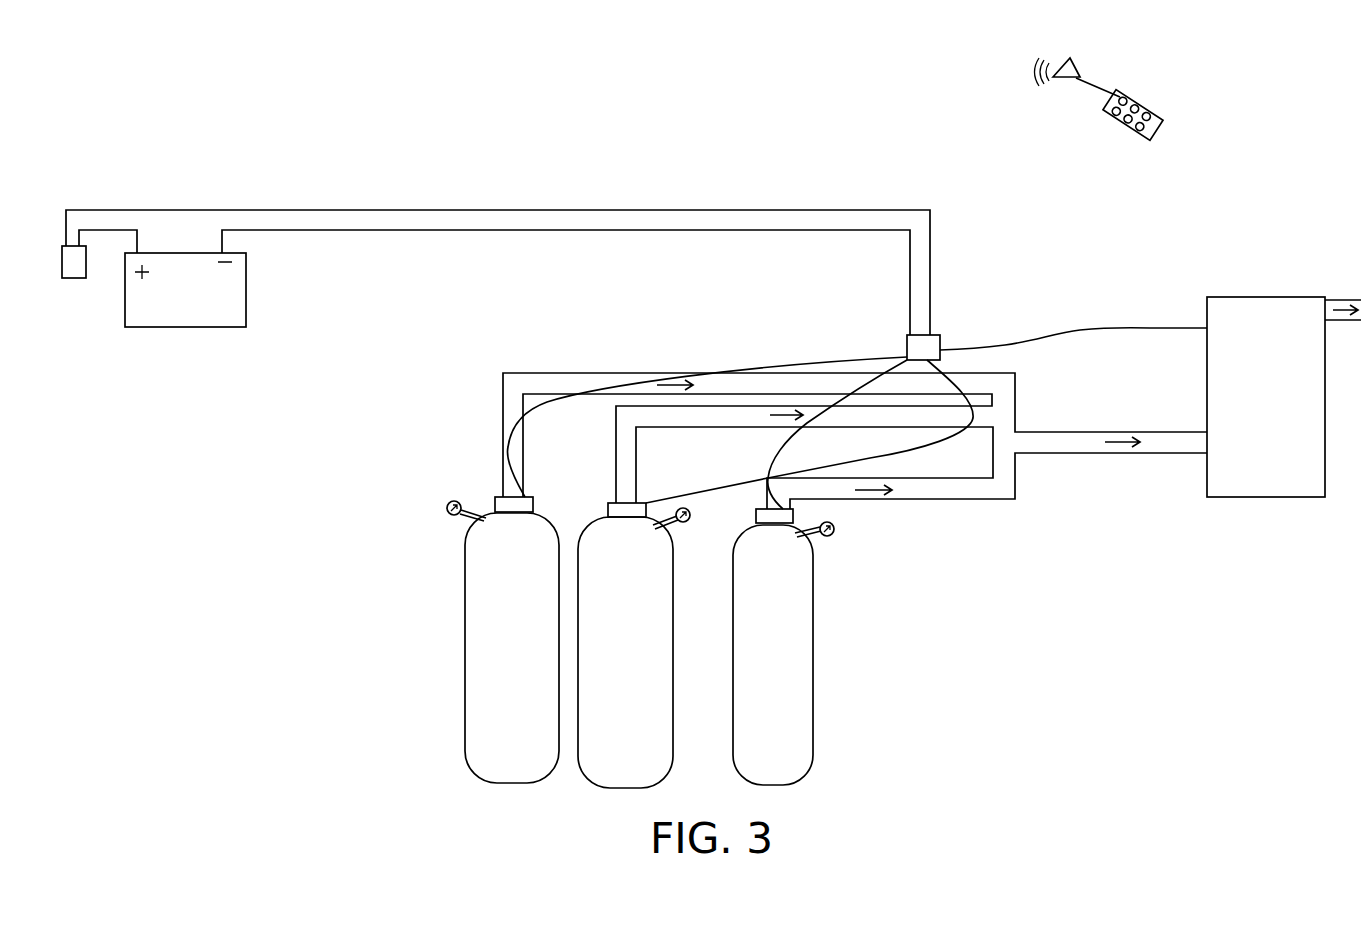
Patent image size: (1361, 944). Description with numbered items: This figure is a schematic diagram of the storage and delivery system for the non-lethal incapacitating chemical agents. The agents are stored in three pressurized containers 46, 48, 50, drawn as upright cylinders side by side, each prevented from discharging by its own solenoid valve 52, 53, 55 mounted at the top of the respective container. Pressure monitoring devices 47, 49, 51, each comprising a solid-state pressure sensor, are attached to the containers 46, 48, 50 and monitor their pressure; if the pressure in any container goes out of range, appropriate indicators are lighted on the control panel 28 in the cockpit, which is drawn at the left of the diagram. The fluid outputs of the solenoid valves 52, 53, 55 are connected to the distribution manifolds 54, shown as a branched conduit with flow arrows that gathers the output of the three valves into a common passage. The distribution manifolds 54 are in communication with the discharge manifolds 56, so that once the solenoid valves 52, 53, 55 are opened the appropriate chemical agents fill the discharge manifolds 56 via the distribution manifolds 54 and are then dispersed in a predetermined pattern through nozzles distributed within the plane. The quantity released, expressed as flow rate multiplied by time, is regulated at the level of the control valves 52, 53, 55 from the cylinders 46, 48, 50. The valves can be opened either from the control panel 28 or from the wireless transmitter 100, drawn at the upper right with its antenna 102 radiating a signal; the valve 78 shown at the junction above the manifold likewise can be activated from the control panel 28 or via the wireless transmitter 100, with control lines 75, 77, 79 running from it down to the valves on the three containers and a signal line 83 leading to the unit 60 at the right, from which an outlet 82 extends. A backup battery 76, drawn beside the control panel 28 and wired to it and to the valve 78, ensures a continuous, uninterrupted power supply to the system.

The control panel 28 is at (72, 275).
The pressurized container 46 is at (472, 620).
The pressure monitoring device 47 is at (447, 513).
The pressurized container 48 is at (598, 778).
The pressure monitoring device 49 is at (686, 523).
The pressurized container 50 is at (742, 730).
The pressure monitoring device 51 is at (832, 537).
The solenoid valve 52 is at (497, 500).
The solenoid valve 53 is at (608, 504).
The distribution manifold 54 is at (558, 372).
The solenoid valve 55 is at (795, 514).
The discharge manifold 56 is at (422, 210).
The control unit 60 is at (1313, 412).
The first control line 75 is at (511, 446).
The backup battery 76 is at (247, 288).
The second control line 77 is at (778, 448).
The valve 78 is at (935, 349).
The third control line 79 is at (910, 448).
The outlet 82 is at (1340, 302).
The signal line 83 is at (1073, 330).
The wireless transmitter 100 is at (1135, 106).
The antenna 102 is at (1081, 66).